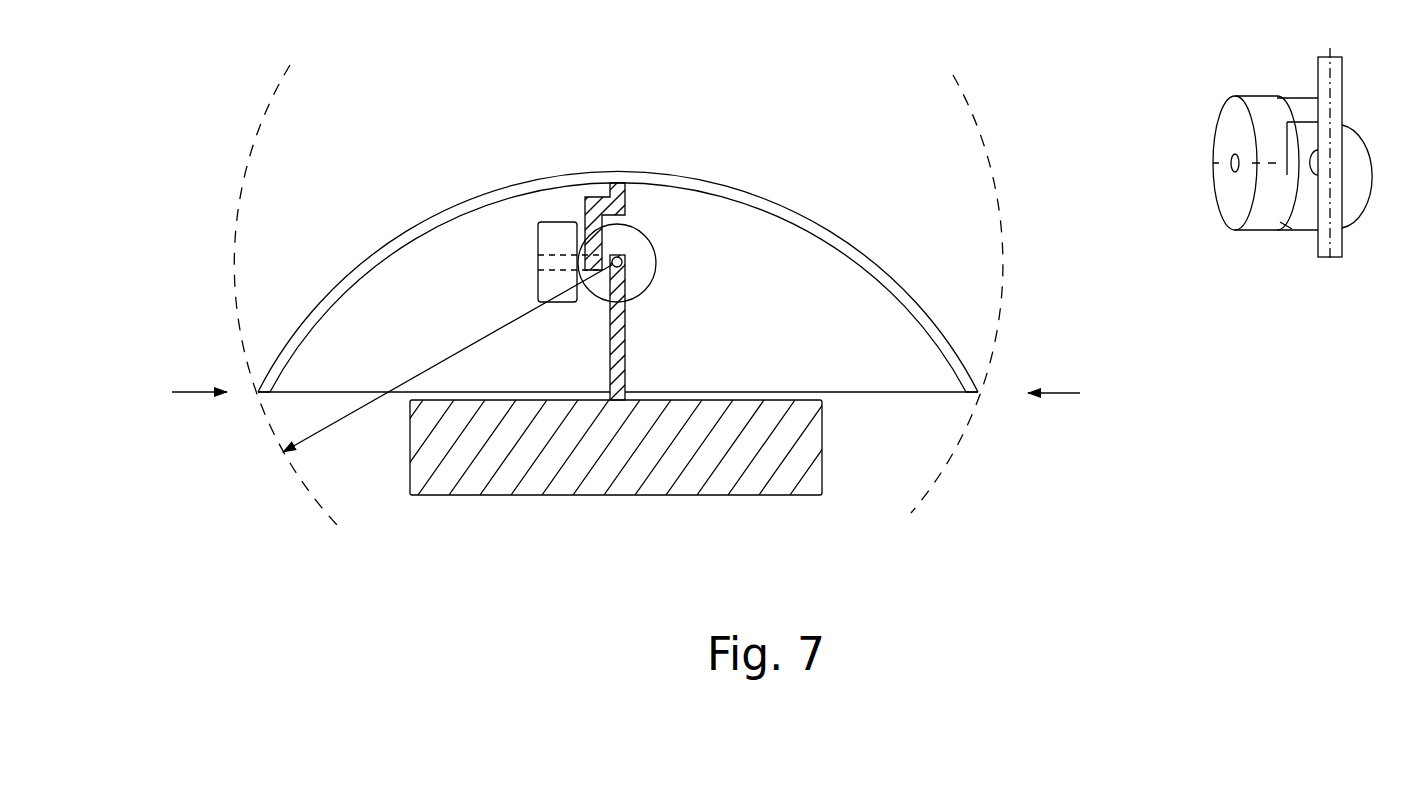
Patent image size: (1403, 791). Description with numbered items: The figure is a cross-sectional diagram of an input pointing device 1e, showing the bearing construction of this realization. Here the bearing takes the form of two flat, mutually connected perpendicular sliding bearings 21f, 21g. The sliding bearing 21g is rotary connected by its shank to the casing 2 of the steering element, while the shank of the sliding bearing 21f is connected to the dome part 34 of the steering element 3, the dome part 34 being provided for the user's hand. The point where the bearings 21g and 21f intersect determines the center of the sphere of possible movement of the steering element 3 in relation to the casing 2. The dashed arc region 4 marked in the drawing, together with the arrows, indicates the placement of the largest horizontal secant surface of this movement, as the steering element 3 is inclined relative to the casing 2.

The dome part 34 is at (460, 208).
The swept region boundary 4 is at (247, 192).
The steering element 3 is at (312, 272).
The casing 2 is at (433, 472).
The input pointing device 1e is at (240, 428).
The sliding bearing 21f is at (918, 199).
The sliding bearing 21g is at (975, 208).